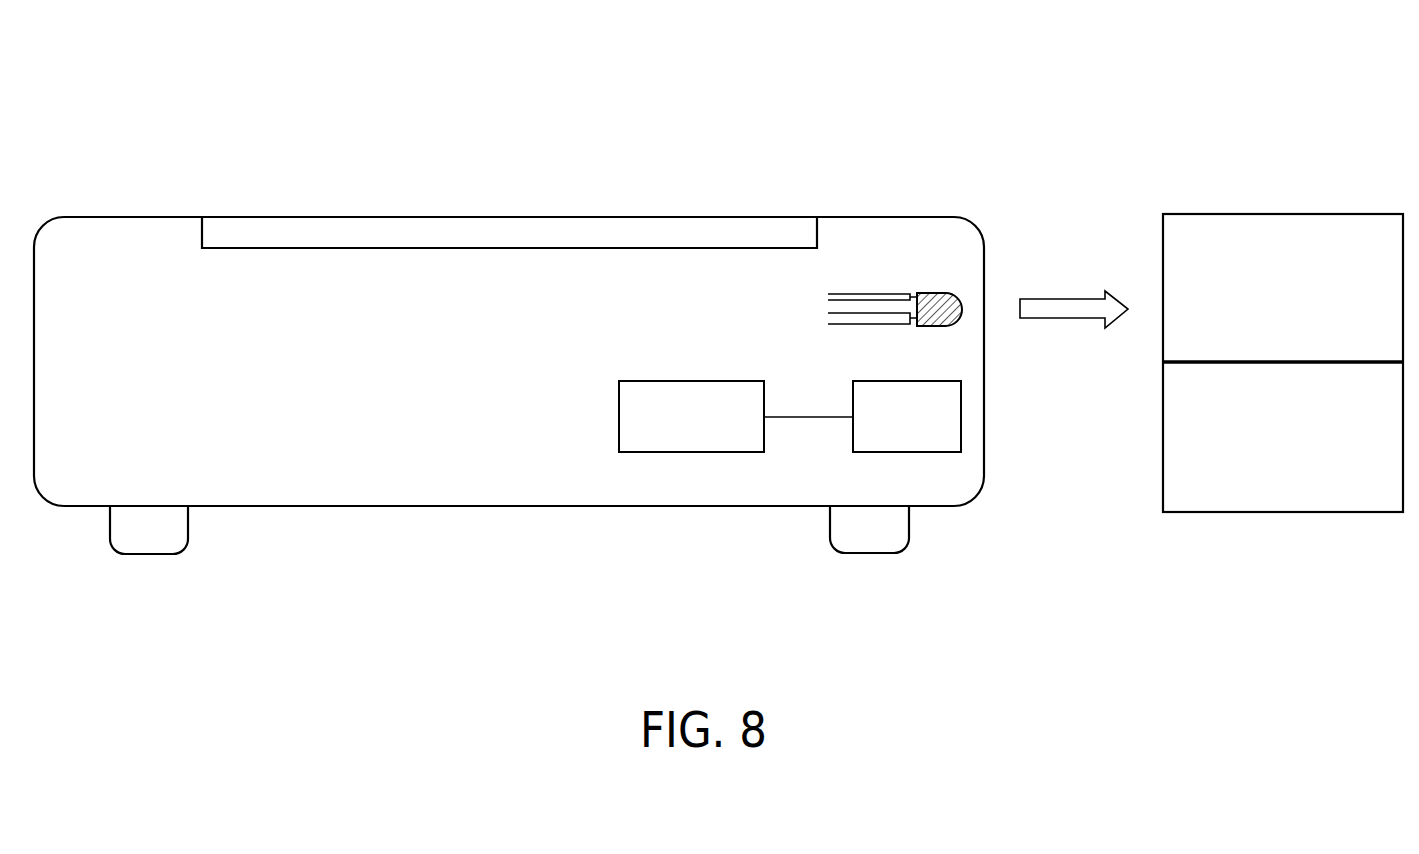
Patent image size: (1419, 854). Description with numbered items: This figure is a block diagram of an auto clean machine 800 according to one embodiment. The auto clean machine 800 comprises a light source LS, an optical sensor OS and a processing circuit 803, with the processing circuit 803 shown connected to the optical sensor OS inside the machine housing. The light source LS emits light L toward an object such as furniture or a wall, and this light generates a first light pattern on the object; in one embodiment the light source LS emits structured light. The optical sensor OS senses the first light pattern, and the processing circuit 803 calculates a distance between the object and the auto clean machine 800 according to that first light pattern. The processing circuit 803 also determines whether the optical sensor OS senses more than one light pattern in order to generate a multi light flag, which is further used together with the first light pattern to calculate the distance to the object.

The auto clean machine 800 is at (876, 85).
The processing circuit 803 is at (619, 413).
The optical sensor OS is at (919, 452).
The light source LS is at (930, 292).
The light L is at (1074, 297).